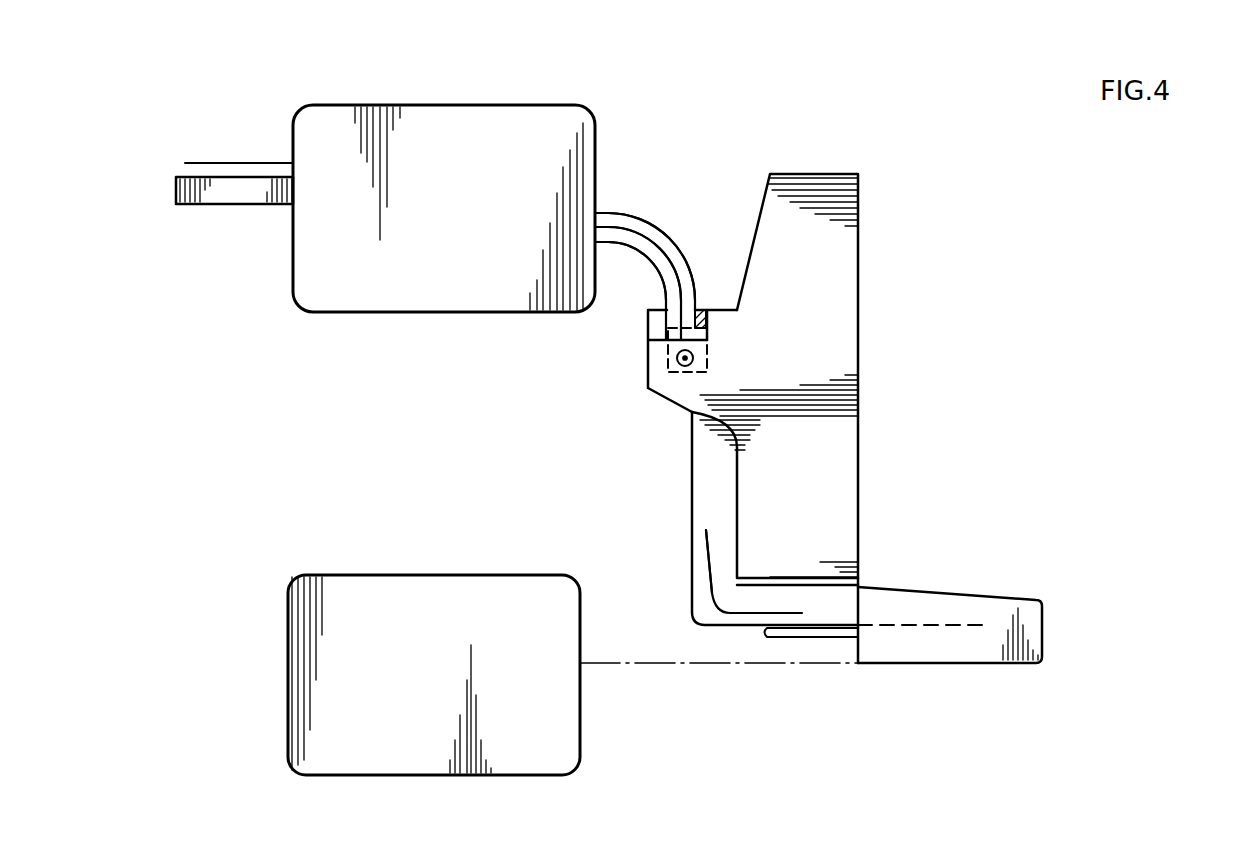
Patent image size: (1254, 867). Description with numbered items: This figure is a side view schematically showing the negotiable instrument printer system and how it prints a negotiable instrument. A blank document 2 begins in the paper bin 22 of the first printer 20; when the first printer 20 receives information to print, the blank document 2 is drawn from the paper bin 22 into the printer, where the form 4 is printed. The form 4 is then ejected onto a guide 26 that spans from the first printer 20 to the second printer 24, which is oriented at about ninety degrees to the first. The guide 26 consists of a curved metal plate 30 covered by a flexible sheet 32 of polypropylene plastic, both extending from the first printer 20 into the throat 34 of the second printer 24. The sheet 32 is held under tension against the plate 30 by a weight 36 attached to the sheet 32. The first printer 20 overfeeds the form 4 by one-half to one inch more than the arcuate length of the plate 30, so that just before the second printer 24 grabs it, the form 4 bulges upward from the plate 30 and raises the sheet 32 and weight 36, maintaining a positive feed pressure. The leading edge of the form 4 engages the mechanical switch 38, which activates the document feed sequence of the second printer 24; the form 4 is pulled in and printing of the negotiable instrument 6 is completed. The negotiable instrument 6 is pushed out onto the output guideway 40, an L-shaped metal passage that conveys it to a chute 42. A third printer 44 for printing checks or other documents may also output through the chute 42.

The blank document 2 is at (202, 163).
The form 4 is at (619, 213).
The negotiable instrument 6 is at (699, 533).
The first printer 20 is at (423, 313).
The paper bin 22 is at (200, 200).
The second printer 24 is at (860, 453).
The guide 26 is at (657, 220).
The curved metal plate 30 is at (638, 263).
The flexible sheet 32 is at (697, 262).
The throat 34 is at (648, 340).
The weight 36 is at (710, 307).
The switch 38 is at (697, 340).
The output guideway 40 is at (692, 568).
The chute 42 is at (975, 665).
The third printer 44 is at (518, 777).